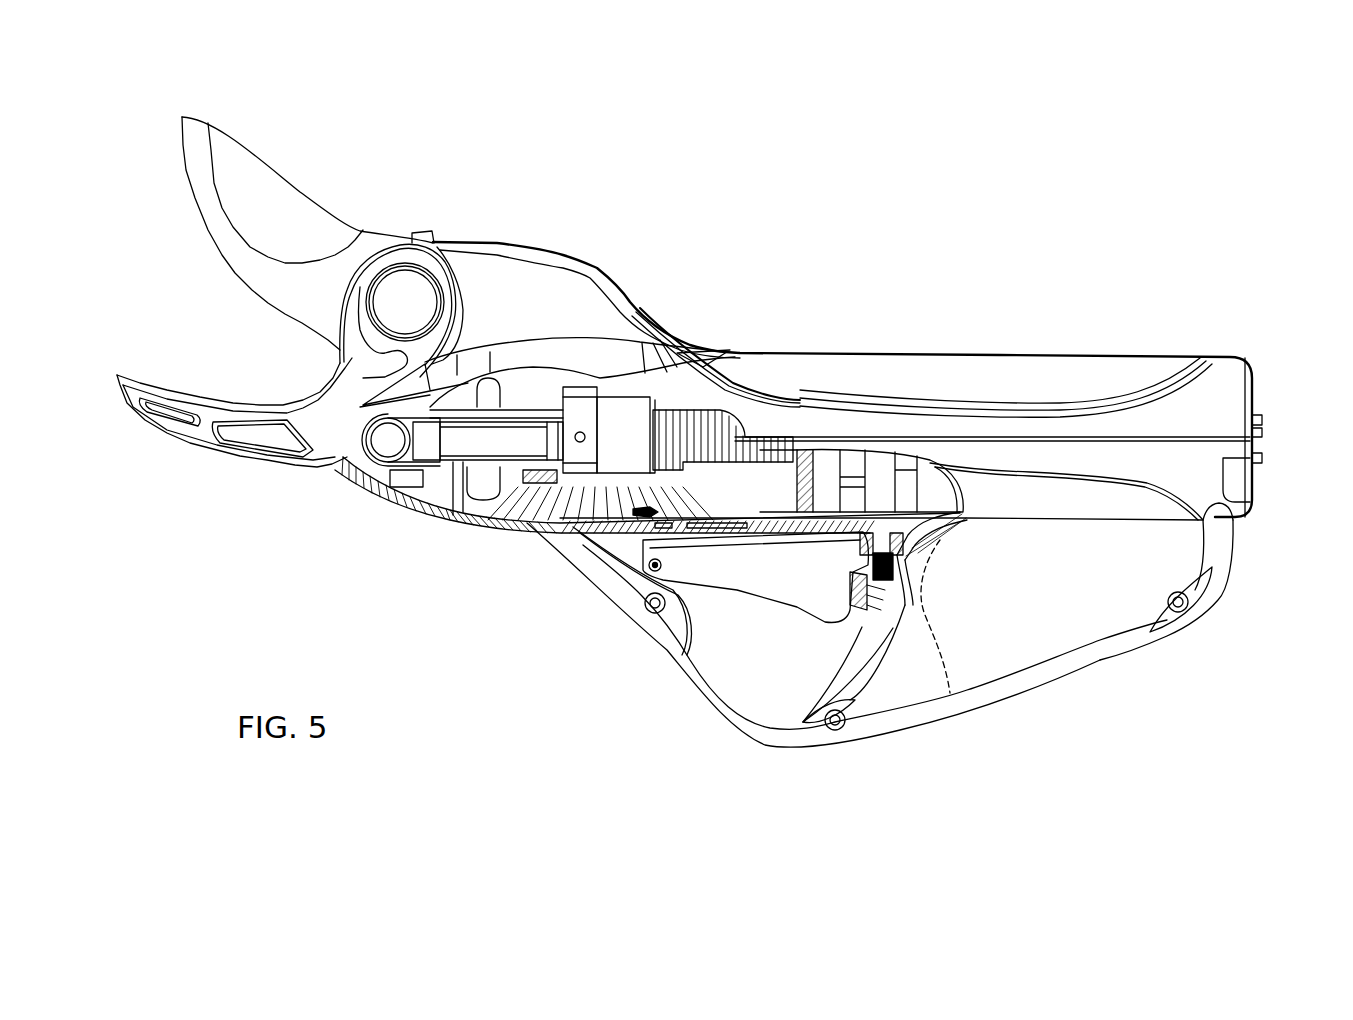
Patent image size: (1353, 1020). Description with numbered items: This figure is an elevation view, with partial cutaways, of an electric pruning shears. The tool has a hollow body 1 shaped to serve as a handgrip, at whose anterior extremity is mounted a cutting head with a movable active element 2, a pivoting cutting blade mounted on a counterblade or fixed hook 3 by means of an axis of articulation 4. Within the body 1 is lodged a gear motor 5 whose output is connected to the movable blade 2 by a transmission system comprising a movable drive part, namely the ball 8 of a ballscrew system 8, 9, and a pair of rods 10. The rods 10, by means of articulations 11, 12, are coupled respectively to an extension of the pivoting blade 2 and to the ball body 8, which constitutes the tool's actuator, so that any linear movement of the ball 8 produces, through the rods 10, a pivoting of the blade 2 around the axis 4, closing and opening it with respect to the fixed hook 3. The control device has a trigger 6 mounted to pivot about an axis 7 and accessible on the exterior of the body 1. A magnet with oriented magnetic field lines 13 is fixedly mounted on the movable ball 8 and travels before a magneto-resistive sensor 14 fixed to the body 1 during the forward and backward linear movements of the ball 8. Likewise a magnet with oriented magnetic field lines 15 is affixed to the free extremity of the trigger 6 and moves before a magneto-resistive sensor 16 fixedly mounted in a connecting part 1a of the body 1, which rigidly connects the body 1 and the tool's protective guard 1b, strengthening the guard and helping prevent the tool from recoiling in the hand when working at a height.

The hollow body 1 is at (513, 303).
The connecting part 1a is at (860, 667).
The protective guard 1b is at (1040, 679).
The movable active element 2 is at (259, 205).
The counterblade or fixed hook 3 is at (260, 433).
The axis of articulation 4 is at (406, 301).
The gear motor 5 is at (908, 482).
The trigger 6 is at (787, 587).
The axis 7 is at (653, 567).
The ball 8 is at (634, 436).
The ballscrew system 9 is at (716, 436).
The rods 10 is at (518, 437).
The articulation 11 is at (390, 445).
The articulation 12 is at (583, 430).
The magnet with oriented magnetic field lines 13 is at (537, 482).
The magneto-resistive sensor 14 is at (636, 513).
The magnet with oriented magnetic field lines 15 is at (855, 600).
The magneto-resistive sensor 16 is at (896, 600).